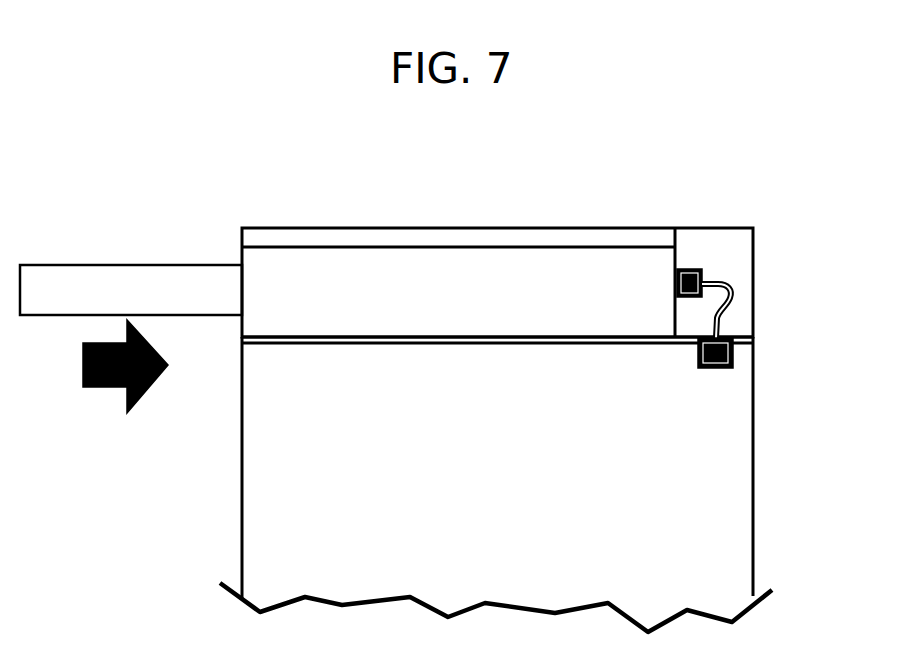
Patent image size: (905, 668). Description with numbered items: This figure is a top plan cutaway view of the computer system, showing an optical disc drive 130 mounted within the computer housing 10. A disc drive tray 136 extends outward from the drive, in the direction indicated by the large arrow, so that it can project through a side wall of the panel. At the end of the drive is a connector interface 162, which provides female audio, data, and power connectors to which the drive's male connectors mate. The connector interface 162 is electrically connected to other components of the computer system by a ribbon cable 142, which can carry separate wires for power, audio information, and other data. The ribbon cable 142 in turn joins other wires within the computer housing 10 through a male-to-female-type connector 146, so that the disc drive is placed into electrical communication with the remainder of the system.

The computer housing 10 is at (280, 456).
The optical disc drive 130 is at (418, 268).
The disc drive tray 136 is at (93, 283).
The ribbon cable 142 is at (730, 283).
The male-to-female-type connector 146 is at (735, 352).
The connector interface 162 is at (690, 268).